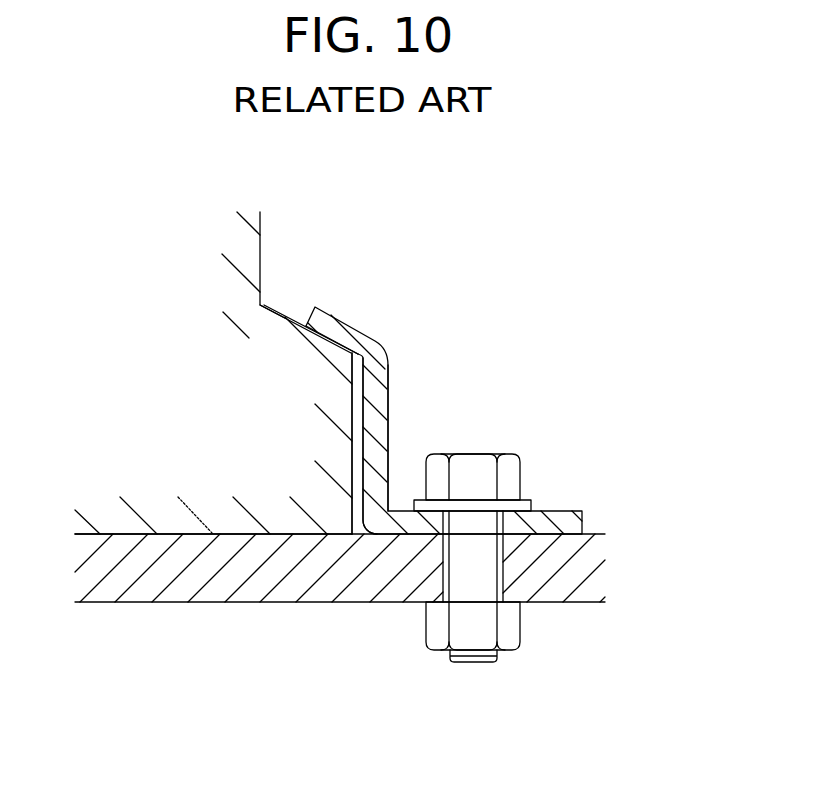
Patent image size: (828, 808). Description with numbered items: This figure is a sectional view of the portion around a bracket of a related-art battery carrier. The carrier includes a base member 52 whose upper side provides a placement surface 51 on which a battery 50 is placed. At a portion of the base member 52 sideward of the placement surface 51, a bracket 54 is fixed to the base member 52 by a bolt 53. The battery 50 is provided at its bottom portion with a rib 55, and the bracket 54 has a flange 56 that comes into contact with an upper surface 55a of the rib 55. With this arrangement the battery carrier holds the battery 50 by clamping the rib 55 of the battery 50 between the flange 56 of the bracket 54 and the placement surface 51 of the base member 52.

The battery 50 is at (265, 221).
The placement surface 51 is at (285, 533).
The base member 52 is at (590, 583).
The bolt 53 is at (473, 471).
The bracket 54 is at (562, 511).
The rib 55 is at (338, 410).
The upper surface of rib 55a is at (275, 308).
The flange 56 is at (338, 332).